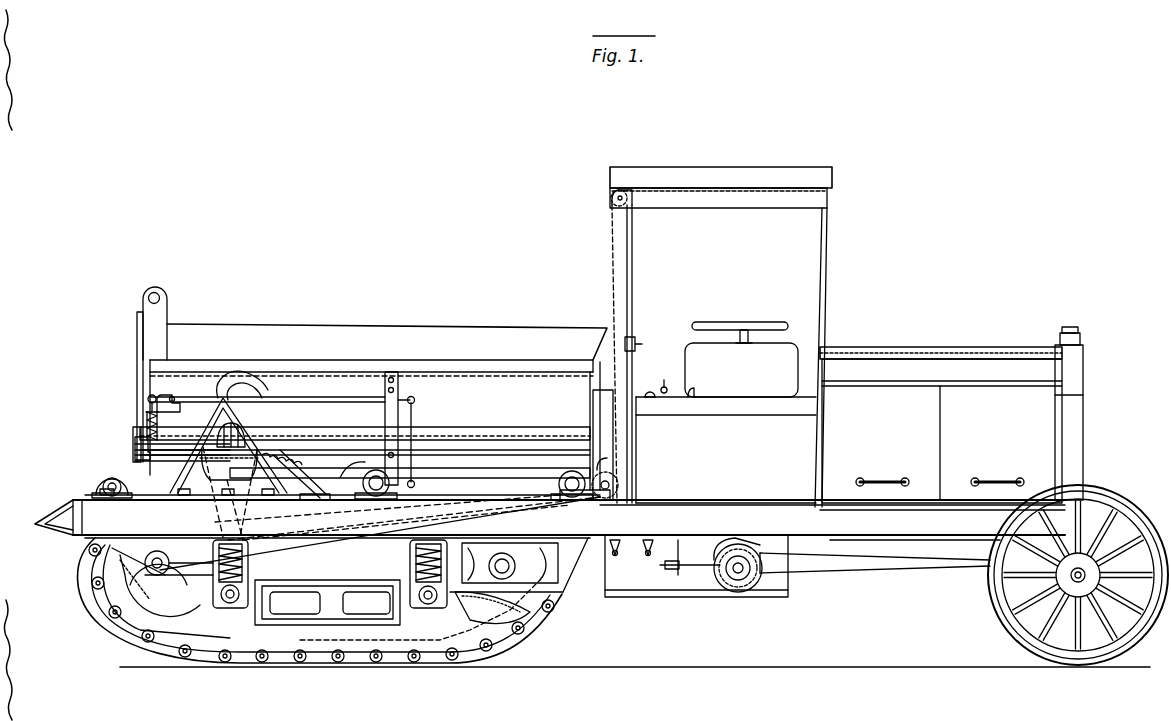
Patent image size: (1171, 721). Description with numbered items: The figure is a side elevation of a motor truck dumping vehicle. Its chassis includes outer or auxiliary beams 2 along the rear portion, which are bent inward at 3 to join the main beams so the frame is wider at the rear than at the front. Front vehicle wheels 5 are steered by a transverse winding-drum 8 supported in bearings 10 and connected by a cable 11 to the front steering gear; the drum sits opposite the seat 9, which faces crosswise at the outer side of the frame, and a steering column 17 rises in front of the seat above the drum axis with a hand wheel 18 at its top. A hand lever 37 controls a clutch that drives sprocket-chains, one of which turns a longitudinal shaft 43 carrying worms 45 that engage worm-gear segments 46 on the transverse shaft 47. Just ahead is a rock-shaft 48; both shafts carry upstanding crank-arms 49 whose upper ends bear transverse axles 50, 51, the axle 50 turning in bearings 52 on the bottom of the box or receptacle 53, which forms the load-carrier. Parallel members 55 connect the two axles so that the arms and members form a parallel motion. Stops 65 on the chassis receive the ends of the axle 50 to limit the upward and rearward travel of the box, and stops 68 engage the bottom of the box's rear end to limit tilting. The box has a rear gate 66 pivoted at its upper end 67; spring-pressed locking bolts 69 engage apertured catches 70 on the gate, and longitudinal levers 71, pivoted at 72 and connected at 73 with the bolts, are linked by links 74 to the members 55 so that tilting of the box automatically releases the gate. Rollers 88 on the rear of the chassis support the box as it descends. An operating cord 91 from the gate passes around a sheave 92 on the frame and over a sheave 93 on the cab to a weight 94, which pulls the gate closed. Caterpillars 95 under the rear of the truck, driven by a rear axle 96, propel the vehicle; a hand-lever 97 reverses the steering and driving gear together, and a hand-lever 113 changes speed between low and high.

The outer or auxiliary beams 2 is at (330, 580).
The inward bend of auxiliary beams 3 is at (690, 520).
The front vehicle wheels 5 is at (1003, 607).
The winding-drum 8 is at (718, 598).
The seat 9 is at (800, 360).
The bearings 10 is at (738, 550).
The cable 11 is at (900, 568).
The steering column 17 is at (742, 344).
The hand wheel 18 is at (758, 326).
The hand lever 37 is at (650, 400).
The longitudinal shaft 43 is at (480, 436).
The worms 45 is at (240, 425).
The worm-gear segments 46 is at (280, 455).
The transverse shaft 47 is at (212, 548).
The rock-shaft 48 is at (410, 560).
The crank-arms 49 is at (366, 470).
The axle 50 is at (380, 503).
The axle 51 is at (604, 502).
The bearings 52 is at (360, 466).
The box or receptacle 53 is at (470, 332).
The parallel members 55 is at (478, 482).
The stops 65 is at (252, 378).
The rear gate 66 is at (136, 350).
The upper end pivot of gate 67 is at (163, 298).
The stops 68 is at (73, 524).
The locking bolts 69 is at (146, 425).
The apertured catches 70 is at (135, 446).
The levers 71 is at (320, 397).
The pivot 72 is at (173, 397).
The pivotal connection 73 is at (148, 400).
The links 74 is at (408, 420).
The rollers 88 is at (100, 478).
The operating cord or rope 91 is at (612, 222).
The sheave 92 is at (612, 464).
The sheave 93 is at (608, 197).
The weight 94 is at (634, 343).
The caterpillars 95 is at (330, 548).
The rear axle 96 is at (130, 578).
The hand-lever 97 is at (697, 400).
The hand-lever 113 is at (664, 384).